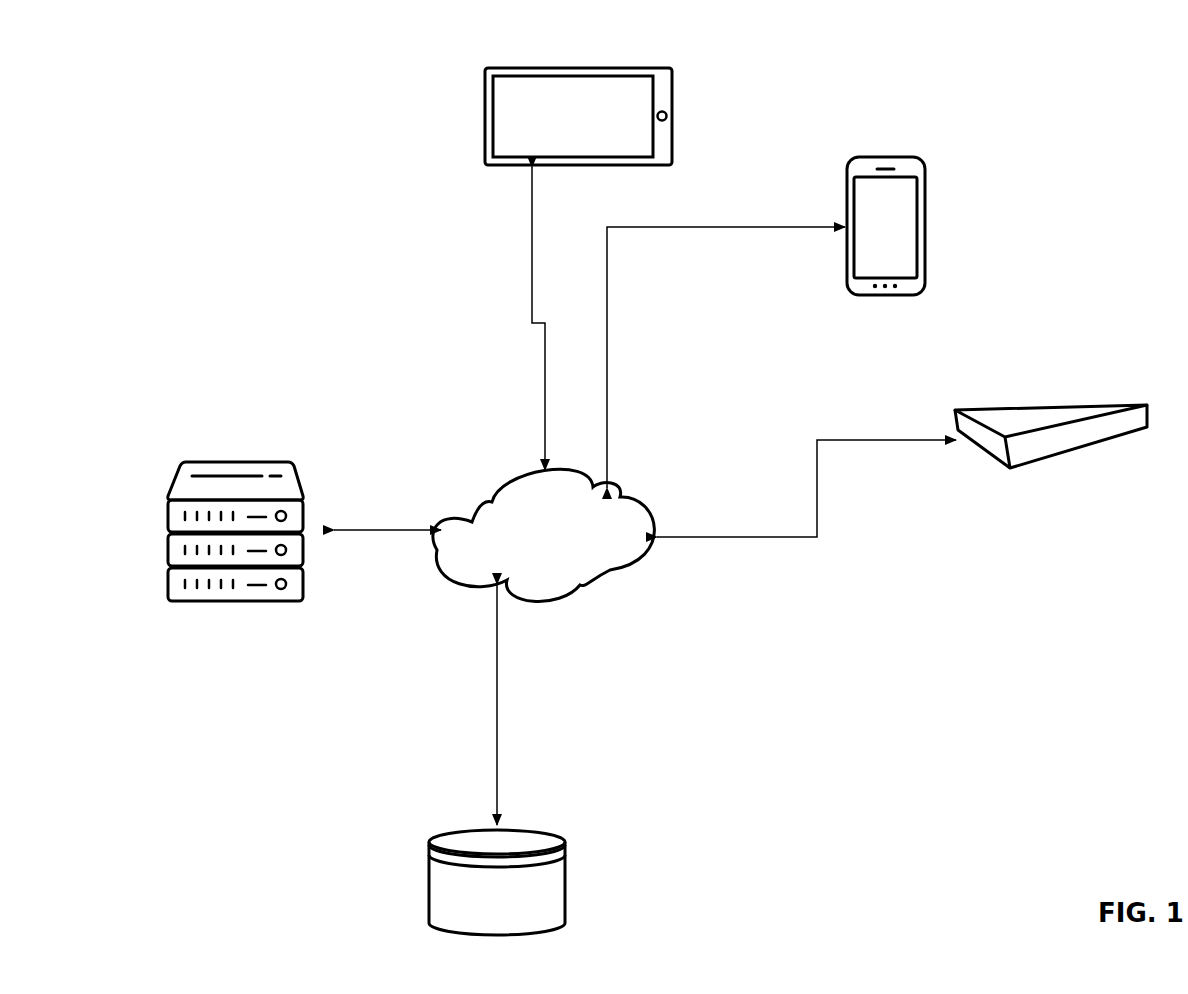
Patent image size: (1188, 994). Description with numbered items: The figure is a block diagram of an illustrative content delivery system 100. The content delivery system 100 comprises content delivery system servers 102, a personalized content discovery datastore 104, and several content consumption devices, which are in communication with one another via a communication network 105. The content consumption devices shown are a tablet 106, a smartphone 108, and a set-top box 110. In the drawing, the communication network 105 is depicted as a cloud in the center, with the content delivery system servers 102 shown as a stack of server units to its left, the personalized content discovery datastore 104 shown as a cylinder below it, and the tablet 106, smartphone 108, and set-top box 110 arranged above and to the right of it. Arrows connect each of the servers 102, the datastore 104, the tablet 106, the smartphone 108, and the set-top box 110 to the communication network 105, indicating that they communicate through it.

The content delivery system 100 is at (102, 40).
The content delivery system servers 102 is at (287, 461).
The personalized content discovery datastore 104 is at (543, 831).
The communication network 105 is at (592, 585).
The tablet 106 is at (484, 155).
The smartphone 108 is at (925, 164).
The set-top box 110 is at (1095, 400).